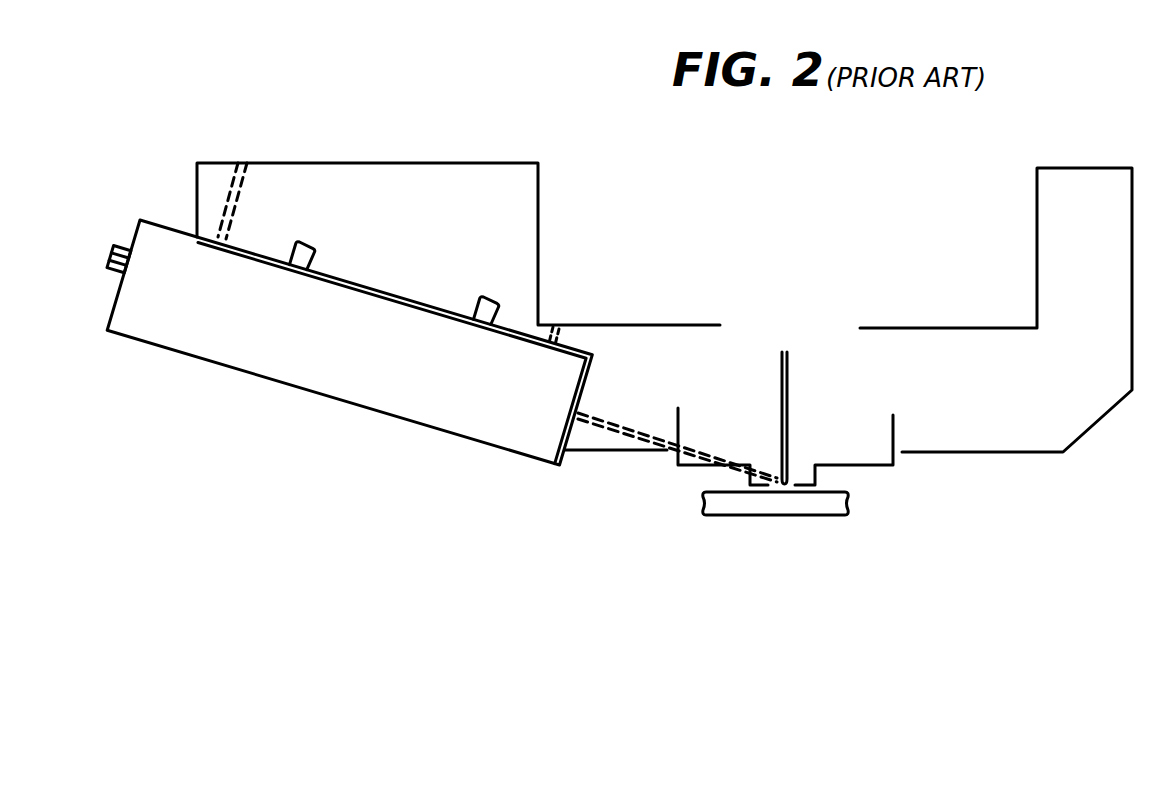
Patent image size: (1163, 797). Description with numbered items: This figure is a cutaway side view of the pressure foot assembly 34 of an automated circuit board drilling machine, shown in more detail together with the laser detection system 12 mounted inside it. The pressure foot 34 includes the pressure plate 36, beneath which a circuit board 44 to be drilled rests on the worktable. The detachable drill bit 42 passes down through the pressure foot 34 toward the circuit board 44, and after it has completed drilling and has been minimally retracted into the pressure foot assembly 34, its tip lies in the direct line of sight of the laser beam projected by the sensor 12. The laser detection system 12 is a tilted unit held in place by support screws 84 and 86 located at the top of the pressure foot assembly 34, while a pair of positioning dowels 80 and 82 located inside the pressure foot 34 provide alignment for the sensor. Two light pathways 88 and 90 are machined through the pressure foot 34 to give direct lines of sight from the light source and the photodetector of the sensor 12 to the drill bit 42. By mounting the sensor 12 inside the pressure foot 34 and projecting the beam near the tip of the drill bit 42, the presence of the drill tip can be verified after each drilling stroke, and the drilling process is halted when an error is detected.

The laser detection system 12 is at (248, 405).
The pressure foot 34 is at (505, 96).
The pressure plate 36 is at (795, 478).
The drill bit 42 is at (788, 452).
The circuit board 44 is at (870, 507).
The positioning dowel 80 is at (302, 243).
The positioning dowel 82 is at (492, 297).
The support screw 84 is at (243, 162).
The support screw 86 is at (566, 336).
The light pathway 88 is at (597, 421).
The light pathway 90 is at (627, 431).